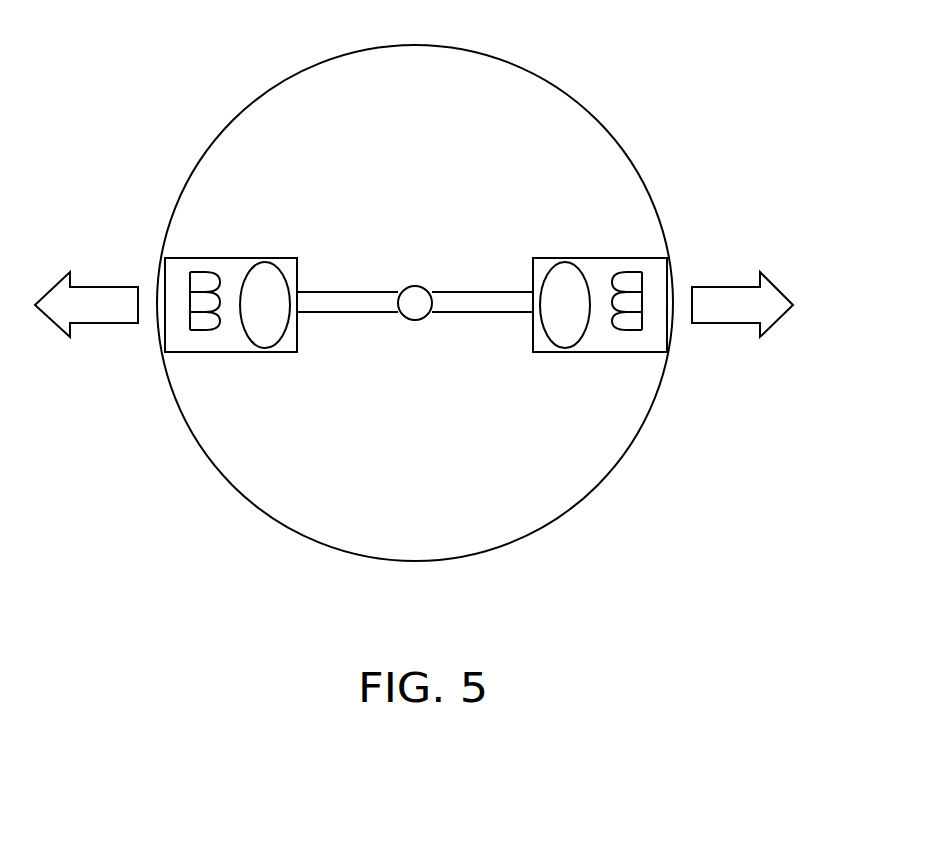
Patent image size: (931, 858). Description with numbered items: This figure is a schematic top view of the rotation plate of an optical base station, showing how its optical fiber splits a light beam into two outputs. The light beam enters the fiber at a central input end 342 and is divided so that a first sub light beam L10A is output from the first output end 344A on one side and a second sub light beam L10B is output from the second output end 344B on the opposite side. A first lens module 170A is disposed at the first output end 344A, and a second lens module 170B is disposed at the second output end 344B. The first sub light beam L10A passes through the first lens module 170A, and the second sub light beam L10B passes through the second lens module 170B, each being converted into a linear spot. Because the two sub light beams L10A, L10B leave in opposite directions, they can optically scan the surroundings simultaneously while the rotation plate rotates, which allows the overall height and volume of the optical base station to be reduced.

The first lens module 170A is at (222, 258).
The second lens module 170B is at (608, 258).
The input end 342 is at (412, 290).
The first output end 344A is at (302, 320).
The second output end 344B is at (528, 320).
The first sub light beam L10A is at (98, 295).
The second sub light beam L10B is at (732, 295).